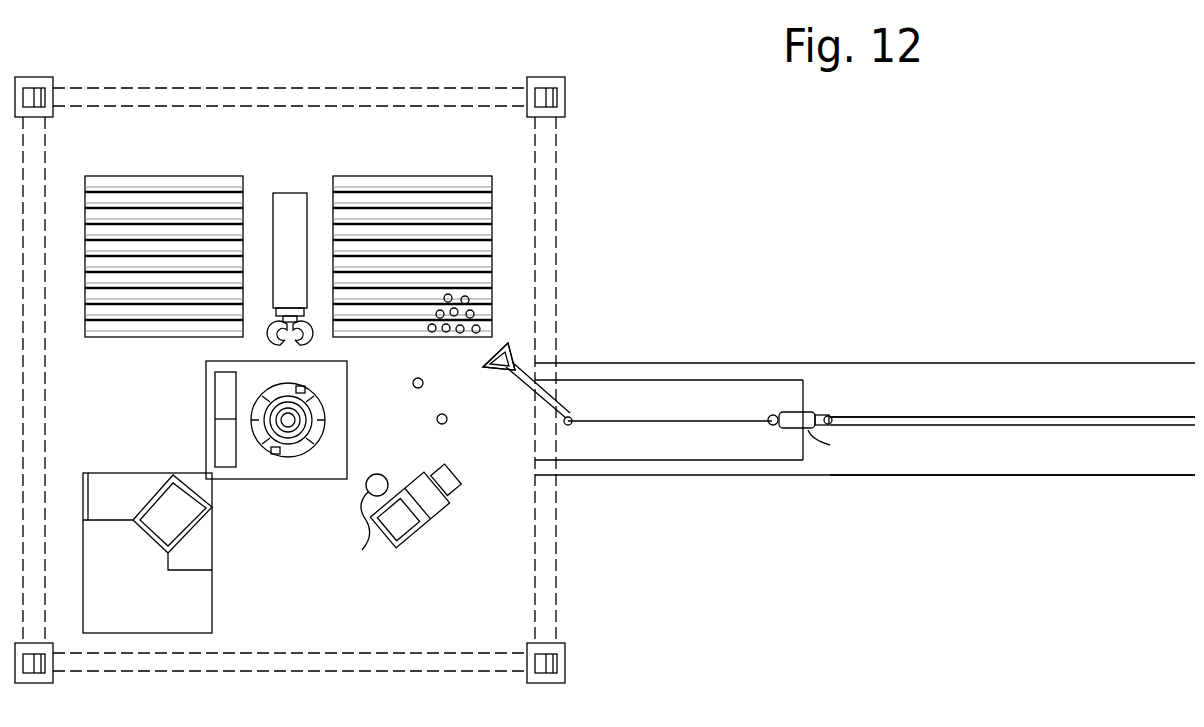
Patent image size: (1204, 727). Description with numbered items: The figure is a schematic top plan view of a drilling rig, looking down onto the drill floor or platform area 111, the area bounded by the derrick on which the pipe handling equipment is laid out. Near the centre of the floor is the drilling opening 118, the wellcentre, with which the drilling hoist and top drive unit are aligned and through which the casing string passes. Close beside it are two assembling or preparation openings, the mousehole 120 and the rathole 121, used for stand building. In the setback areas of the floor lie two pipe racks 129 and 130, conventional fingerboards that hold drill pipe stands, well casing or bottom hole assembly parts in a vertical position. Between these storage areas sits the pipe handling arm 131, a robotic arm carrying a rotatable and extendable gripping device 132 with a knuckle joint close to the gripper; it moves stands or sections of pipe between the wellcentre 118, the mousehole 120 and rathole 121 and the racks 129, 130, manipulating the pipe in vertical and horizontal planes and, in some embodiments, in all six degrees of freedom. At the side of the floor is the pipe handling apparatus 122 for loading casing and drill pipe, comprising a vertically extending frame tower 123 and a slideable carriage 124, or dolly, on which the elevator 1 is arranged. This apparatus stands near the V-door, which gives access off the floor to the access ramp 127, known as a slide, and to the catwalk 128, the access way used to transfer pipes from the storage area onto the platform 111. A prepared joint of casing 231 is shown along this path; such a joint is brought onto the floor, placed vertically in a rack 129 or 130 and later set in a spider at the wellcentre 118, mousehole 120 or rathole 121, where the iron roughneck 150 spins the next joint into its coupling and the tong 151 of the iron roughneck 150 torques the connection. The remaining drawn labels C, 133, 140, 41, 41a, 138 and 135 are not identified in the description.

The drill floor 111 is at (107, 130).
The pipe rack 129 is at (180, 130).
The pipe rack 130 is at (412, 176).
The pipe handling arm 131 is at (288, 193).
The gripping device 132 is at (275, 346).
The drilling opening 118 is at (295, 452).
The container C is at (115, 495).
The mousehole 120 is at (413, 383).
The rathole 121 is at (438, 423).
The iron roughneck 150 is at (460, 512).
The tong 151 is at (366, 500).
The pipe handling apparatus 122 is at (502, 318).
The frame tower 123 is at (512, 352).
The slideable carriage 124 is at (495, 373).
The rail line 133 is at (550, 398).
The rail 140 is at (698, 420).
The access ramp 127 is at (643, 445).
The prepared joint of casing 231 is at (1056, 400).
The line 41 is at (1000, 420).
The line end 41a is at (815, 432).
The catwalk 128 is at (1080, 480).
The connector end 138 is at (757, 412).
The coupler 135 is at (795, 410).
The elevator 1 is at (826, 398).